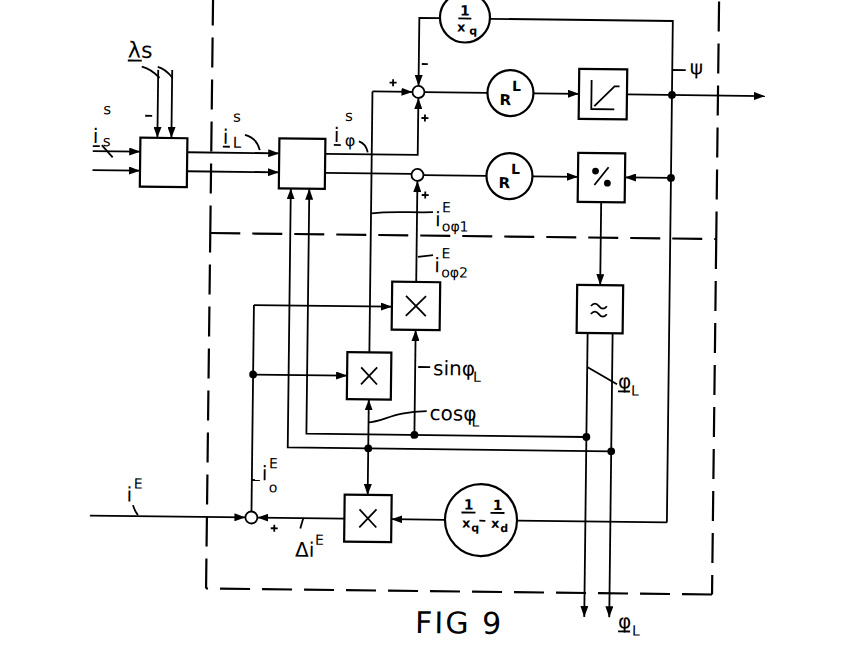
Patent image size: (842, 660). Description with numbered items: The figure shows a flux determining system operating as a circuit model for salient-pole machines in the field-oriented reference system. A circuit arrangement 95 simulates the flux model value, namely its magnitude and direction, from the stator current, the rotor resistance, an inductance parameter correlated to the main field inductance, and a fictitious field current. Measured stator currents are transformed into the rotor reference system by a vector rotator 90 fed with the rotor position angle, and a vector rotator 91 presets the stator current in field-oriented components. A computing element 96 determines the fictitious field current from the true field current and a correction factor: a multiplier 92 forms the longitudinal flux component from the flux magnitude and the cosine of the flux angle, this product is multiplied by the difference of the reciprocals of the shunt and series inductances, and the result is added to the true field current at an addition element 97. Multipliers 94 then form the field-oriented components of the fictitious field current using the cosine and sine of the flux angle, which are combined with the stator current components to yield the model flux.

The vector rotator 90 is at (162, 190).
The vector rotator 91 is at (299, 140).
The multiplier 92 is at (370, 542).
The multipliers 94 is at (440, 307).
The circuit arrangement 95 is at (716, 114).
The computing element 96 is at (716, 290).
The addition element 97 is at (252, 525).